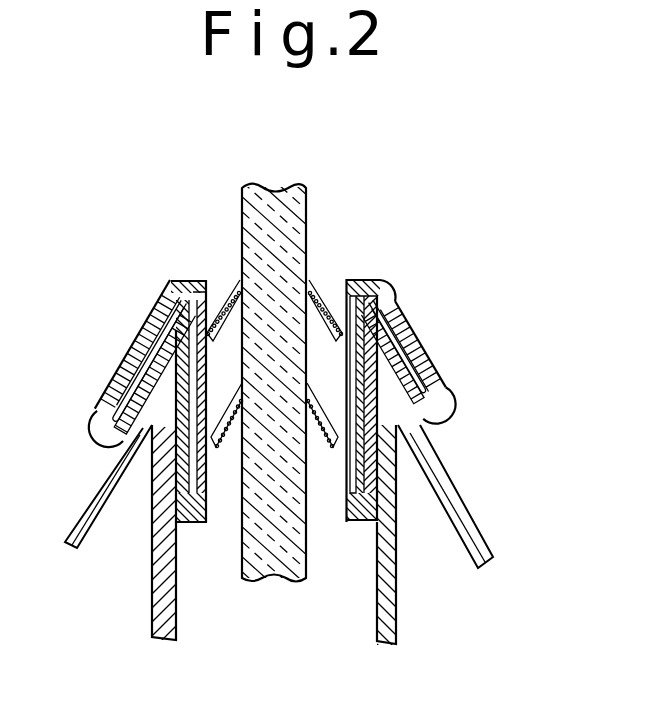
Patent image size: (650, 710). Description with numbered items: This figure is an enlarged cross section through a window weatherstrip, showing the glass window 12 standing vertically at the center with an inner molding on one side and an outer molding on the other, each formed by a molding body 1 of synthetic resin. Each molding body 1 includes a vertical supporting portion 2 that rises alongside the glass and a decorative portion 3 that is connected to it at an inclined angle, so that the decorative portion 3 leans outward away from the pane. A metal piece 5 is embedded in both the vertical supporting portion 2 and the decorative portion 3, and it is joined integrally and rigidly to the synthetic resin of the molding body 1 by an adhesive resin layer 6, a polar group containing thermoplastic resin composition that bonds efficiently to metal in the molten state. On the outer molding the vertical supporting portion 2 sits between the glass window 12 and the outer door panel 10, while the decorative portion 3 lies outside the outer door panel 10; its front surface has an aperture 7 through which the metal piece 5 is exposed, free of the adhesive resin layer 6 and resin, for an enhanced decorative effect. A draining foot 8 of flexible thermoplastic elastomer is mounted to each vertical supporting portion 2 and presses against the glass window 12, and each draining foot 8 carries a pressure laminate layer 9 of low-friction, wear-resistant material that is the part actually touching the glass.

The molding body 1 is at (175, 280).
The vertical supporting portion 2 is at (172, 452).
The decorative portion 3 is at (138, 322).
The metal piece 5 is at (113, 393).
The adhesive resin layer 6 is at (110, 392).
The aperture 7 is at (440, 347).
The draining foot 8 is at (223, 300).
The pressure laminate layer 9 is at (218, 446).
The outer door panel 10 is at (162, 609).
The glass window 12 is at (270, 205).